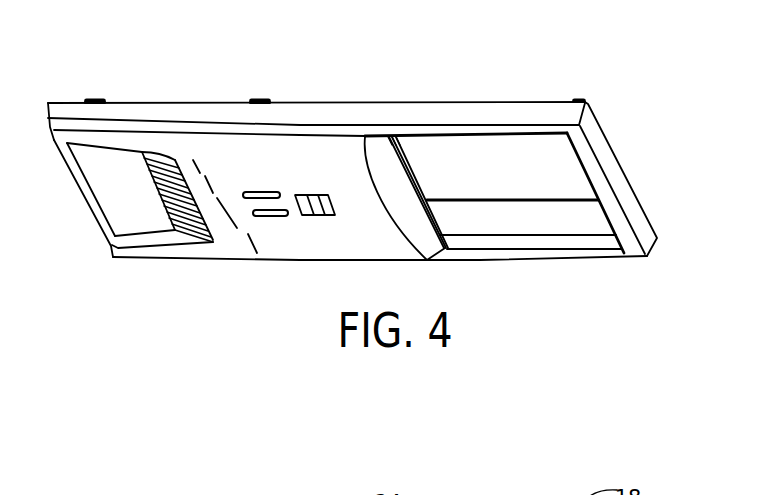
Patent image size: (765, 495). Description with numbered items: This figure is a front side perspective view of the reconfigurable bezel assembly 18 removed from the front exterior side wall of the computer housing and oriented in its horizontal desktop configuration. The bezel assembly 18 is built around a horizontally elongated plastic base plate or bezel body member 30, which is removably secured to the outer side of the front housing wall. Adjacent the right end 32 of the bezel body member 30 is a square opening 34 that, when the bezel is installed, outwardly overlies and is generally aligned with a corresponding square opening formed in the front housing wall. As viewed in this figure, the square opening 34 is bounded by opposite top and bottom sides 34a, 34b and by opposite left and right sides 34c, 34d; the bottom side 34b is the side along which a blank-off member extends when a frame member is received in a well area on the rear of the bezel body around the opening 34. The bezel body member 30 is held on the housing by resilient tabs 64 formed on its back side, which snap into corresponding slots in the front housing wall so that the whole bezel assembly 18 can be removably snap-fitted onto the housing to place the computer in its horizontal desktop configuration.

The bezel assembly 18 is at (365, 155).
The bezel body member 30 is at (290, 252).
The right end 32 is at (610, 164).
The square opening 34 is at (515, 186).
The top side 34a is at (446, 138).
The bottom side 34b is at (531, 249).
The left side 34c is at (443, 214).
The right side 34d is at (591, 195).
The resilient tabs 64 is at (91, 100).